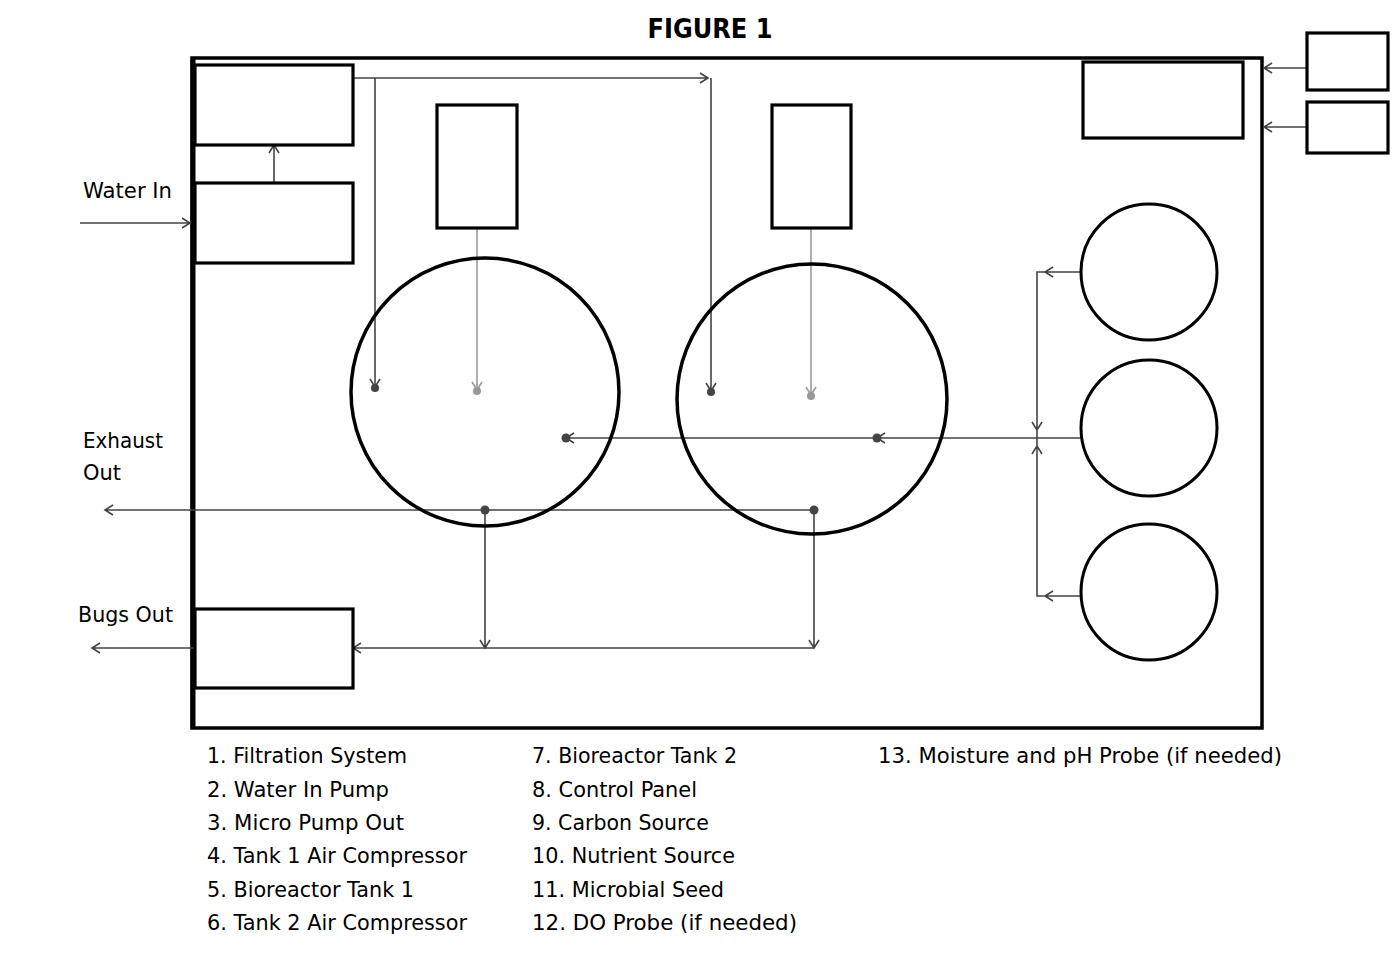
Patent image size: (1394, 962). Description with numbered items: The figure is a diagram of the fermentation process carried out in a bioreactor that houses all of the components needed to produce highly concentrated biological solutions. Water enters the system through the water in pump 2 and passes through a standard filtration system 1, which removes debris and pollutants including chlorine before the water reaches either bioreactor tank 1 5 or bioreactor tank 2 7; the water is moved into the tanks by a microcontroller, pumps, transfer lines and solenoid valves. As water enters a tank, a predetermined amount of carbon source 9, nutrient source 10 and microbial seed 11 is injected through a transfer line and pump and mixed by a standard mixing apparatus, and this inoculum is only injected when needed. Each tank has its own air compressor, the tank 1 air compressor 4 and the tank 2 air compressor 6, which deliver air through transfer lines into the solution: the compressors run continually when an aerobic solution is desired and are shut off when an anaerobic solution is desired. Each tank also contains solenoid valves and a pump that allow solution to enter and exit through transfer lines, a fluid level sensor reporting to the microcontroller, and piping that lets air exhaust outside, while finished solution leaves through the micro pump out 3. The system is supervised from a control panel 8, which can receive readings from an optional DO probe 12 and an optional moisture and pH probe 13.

The filtration system 1 is at (274, 105).
The water in pump 2 is at (274, 223).
The micro pump out 3 is at (274, 648).
The tank 1 air compressor 4 is at (477, 166).
The bioreactor tank 1 5 is at (485, 392).
The tank 2 air compressor 6 is at (811, 166).
The bioreactor tank 2 7 is at (812, 399).
The control panel 8 is at (1163, 100).
The carbon source 9 is at (1149, 272).
The nutrient source 10 is at (1149, 428).
The microbial seed 11 is at (1149, 592).
The DO probe 12 is at (1347, 61).
The moisture and pH probe 13 is at (1347, 127).